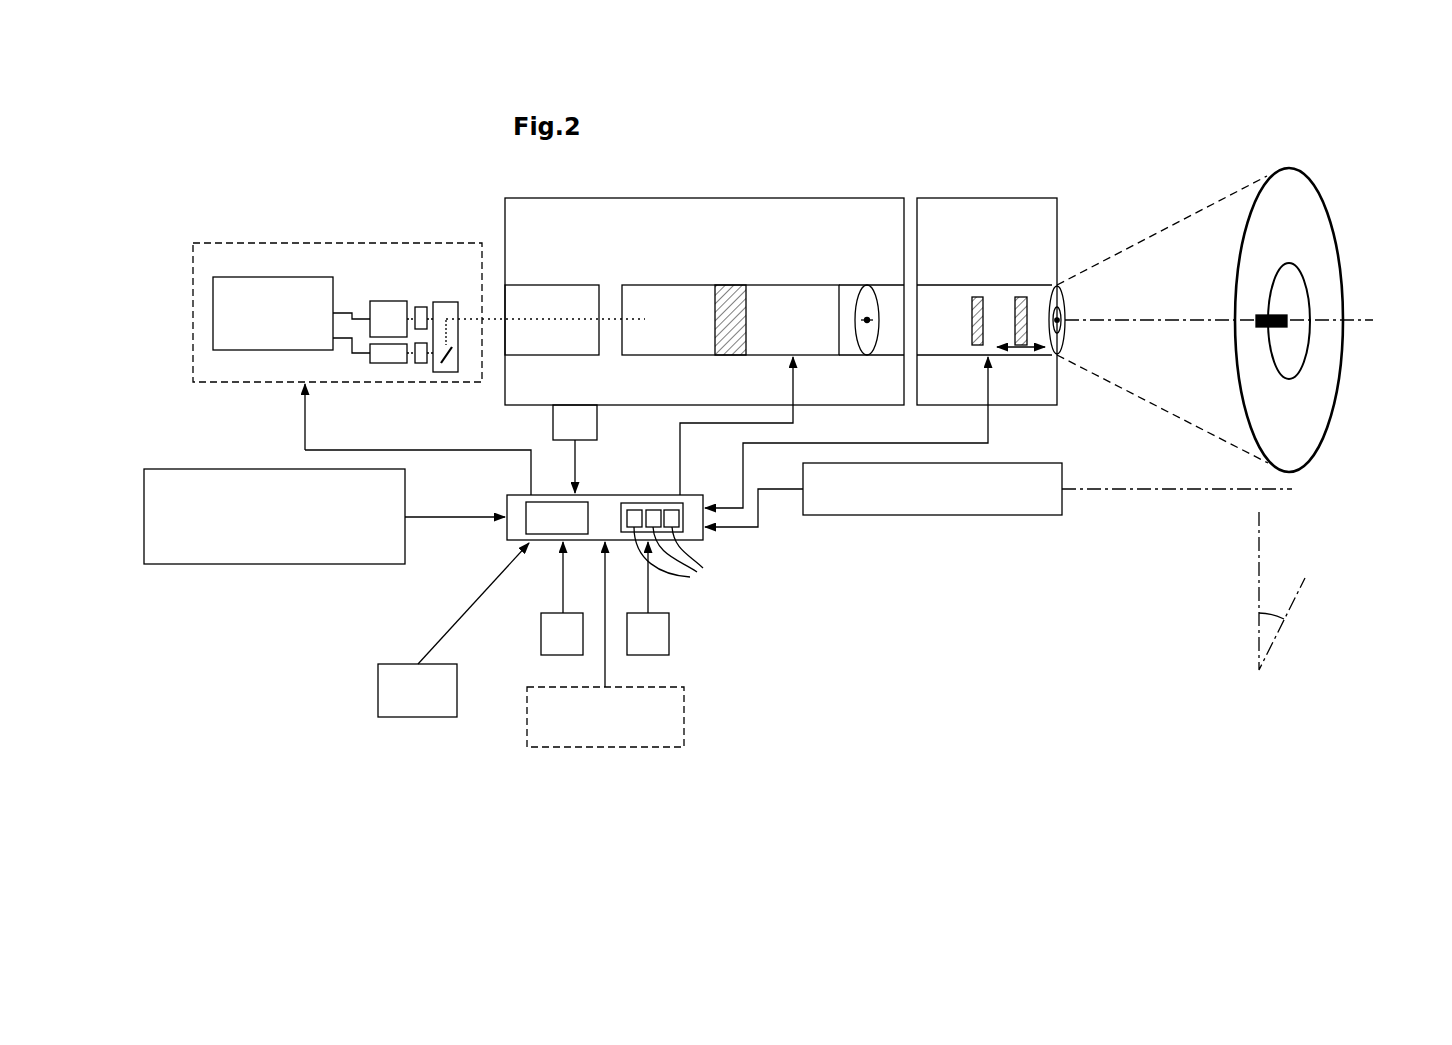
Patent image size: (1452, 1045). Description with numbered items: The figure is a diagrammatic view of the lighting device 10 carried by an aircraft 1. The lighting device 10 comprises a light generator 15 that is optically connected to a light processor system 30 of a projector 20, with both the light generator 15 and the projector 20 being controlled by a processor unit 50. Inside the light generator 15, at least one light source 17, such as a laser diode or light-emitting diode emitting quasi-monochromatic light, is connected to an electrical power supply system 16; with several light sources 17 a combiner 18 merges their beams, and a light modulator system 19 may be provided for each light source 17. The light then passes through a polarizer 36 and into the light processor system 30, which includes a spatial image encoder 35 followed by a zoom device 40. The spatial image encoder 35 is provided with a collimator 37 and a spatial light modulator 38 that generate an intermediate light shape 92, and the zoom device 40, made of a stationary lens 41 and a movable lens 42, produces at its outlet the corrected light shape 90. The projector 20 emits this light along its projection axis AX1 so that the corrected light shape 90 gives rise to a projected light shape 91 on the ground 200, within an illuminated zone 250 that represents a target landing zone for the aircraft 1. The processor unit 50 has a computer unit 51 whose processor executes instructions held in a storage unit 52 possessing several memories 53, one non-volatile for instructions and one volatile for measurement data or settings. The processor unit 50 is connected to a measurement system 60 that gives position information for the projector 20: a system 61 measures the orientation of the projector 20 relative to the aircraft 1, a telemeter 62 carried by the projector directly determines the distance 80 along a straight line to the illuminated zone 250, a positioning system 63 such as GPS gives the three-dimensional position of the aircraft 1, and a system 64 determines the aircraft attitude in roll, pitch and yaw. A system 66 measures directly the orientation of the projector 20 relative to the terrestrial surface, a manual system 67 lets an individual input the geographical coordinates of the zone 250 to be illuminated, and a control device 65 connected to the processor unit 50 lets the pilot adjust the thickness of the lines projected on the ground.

The aircraft 1 is at (261, 709).
The lighting device 10 is at (867, 654).
The light generator 15 is at (193, 368).
The electrical power supply system 16 is at (277, 277).
The light source 17 is at (391, 301).
The combiner 18 is at (444, 372).
The light modulator system 19 is at (422, 307).
The projector 20 is at (1075, 214).
The light processor system 30 is at (950, 196).
The spatial image encoder 35 is at (838, 198).
The polarizer 36 is at (552, 285).
The collimator 37 is at (670, 285).
The spatial light modulator 38 is at (776, 331).
The zoom device 40 is at (1027, 198).
The stationary lens 41 is at (980, 297).
The movable lens 42 is at (1022, 297).
The processor unit 50 is at (547, 540).
The computer unit 51 is at (543, 531).
The storage unit 52 is at (662, 503).
The memories 53 is at (675, 567).
The measurement system 60 is at (603, 552).
The system for measuring the orientation of the projector relative to the aircraft 61 is at (278, 564).
The telemeter 62 is at (973, 515).
The positioning system 63 is at (548, 646).
The attitude determining system 64 is at (634, 646).
The control device 65 is at (591, 729).
The system for measuring the orientation of the projector 66 is at (562, 435).
The manual input system 67 is at (403, 703).
The distance 80 is at (1170, 489).
The corrected light shape 90 is at (1067, 308).
The projected light shape 91 is at (1321, 477).
The intermediate light shape 92 is at (885, 302).
The ground 200 is at (1265, 637).
The illuminated zone 250 is at (1350, 406).
The projection axis AX1 is at (1353, 322).